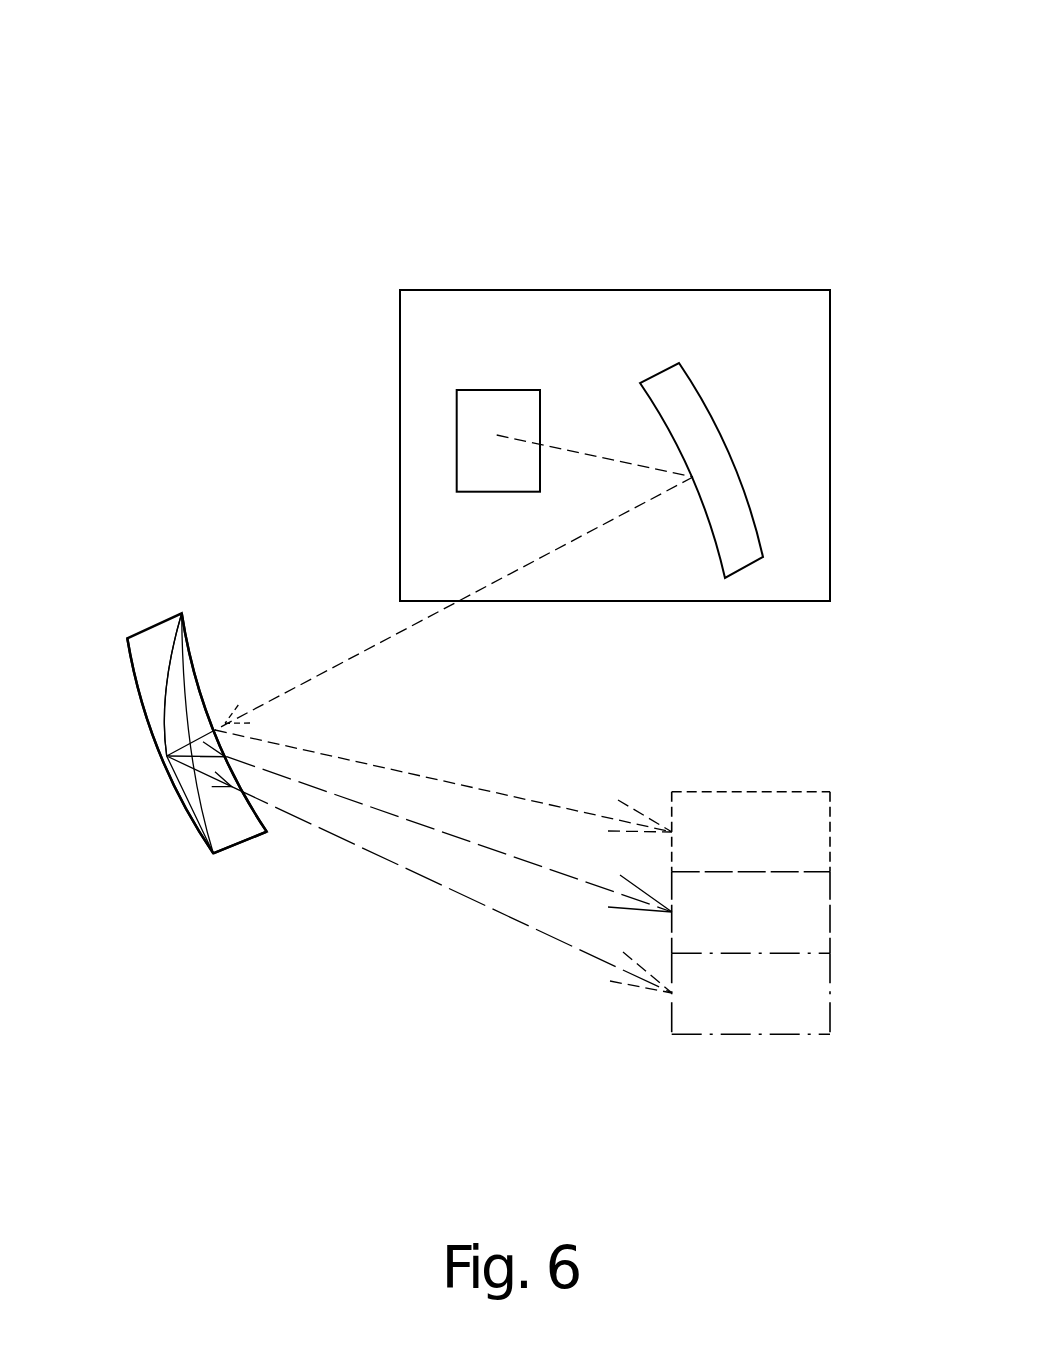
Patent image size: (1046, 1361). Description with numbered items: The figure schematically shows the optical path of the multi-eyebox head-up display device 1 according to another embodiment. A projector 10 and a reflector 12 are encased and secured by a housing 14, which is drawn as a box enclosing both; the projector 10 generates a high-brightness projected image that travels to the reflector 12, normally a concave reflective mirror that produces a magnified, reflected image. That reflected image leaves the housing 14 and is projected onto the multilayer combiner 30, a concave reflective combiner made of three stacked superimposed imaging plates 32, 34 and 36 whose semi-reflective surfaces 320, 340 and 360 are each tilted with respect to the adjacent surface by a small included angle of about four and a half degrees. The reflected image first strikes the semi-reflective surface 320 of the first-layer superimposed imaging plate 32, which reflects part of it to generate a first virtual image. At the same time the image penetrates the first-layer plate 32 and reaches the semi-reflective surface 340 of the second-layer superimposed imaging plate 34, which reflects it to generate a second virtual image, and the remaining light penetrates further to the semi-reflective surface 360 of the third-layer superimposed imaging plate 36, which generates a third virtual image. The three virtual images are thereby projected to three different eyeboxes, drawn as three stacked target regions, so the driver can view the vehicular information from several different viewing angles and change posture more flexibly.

The multi-eyebox head-up display device 1 is at (261, 155).
The housing 14 is at (592, 290).
The projector 10 is at (482, 409).
The reflector 12 is at (700, 418).
The multilayer combiner 30 is at (217, 618).
The first-layer superimposed imaging plate 32 is at (250, 820).
The semi-reflective surface 320 is at (200, 682).
The second-layer superimposed imaging plate 34 is at (190, 800).
The semi-reflective surface 340 is at (197, 815).
The third-layer superimposed imaging plate 36 is at (143, 655).
The semi-reflective surface 360 is at (167, 712).